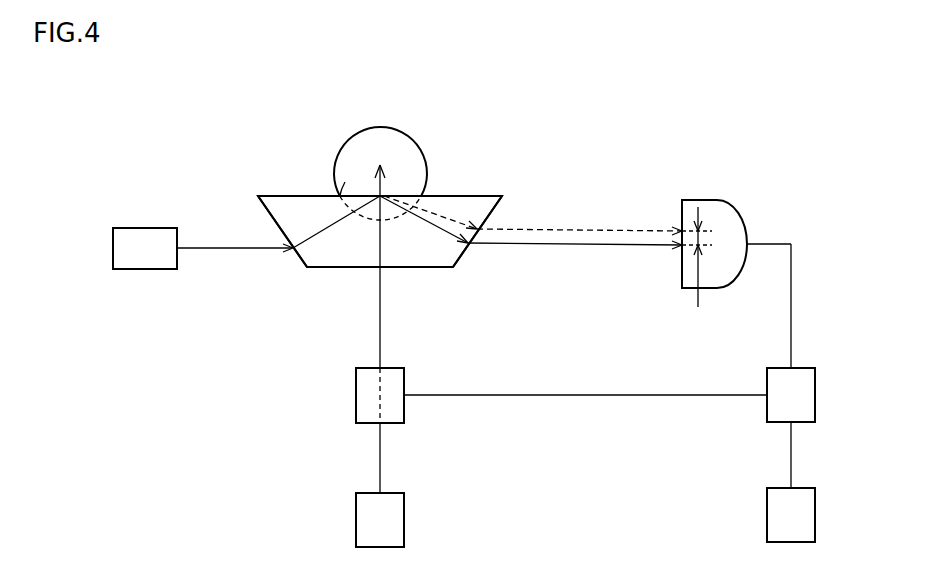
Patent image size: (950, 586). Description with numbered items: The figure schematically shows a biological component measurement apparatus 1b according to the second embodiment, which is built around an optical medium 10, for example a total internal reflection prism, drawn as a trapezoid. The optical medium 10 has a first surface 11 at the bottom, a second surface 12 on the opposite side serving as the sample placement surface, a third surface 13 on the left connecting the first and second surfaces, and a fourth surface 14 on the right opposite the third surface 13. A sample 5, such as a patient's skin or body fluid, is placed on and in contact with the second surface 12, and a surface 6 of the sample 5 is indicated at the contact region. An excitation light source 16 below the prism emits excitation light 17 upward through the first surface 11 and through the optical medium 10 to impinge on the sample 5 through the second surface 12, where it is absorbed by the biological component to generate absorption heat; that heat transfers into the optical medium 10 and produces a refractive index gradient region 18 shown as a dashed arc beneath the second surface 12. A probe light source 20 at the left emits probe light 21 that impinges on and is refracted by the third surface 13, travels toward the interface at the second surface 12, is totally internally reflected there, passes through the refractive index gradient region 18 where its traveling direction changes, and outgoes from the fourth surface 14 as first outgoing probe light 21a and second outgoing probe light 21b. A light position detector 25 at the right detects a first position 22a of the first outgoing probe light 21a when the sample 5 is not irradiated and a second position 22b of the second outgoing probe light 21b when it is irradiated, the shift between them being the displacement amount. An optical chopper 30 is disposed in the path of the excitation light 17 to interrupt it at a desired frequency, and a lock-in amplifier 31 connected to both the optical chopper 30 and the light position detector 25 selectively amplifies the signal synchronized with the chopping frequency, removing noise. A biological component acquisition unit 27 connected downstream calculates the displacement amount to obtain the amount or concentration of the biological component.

The biological component measurement apparatus 1b is at (790, 114).
The sample 5 is at (400, 131).
The surface of sample 6 is at (342, 205).
The optical medium 10 is at (320, 268).
The first surface 11 is at (430, 268).
The second surface 12 is at (462, 196).
The third surface 13 is at (266, 207).
The fourth surface 14 is at (496, 206).
The excitation light source 16 is at (405, 523).
The excitation light 17 is at (381, 452).
The refractive index gradient region 18 is at (362, 222).
The probe light source 20 is at (150, 228).
The probe light 21 is at (220, 249).
The first outgoing probe light 21a is at (601, 246).
The second outgoing probe light 21b is at (610, 229).
The first position 22a is at (680, 247).
The second position 22b is at (680, 229).
The light position detector 25 is at (703, 200).
The biological component acquisition unit 27 is at (767, 522).
The optical chopper 30 is at (405, 381).
The lock-in amplifier 31 is at (767, 381).